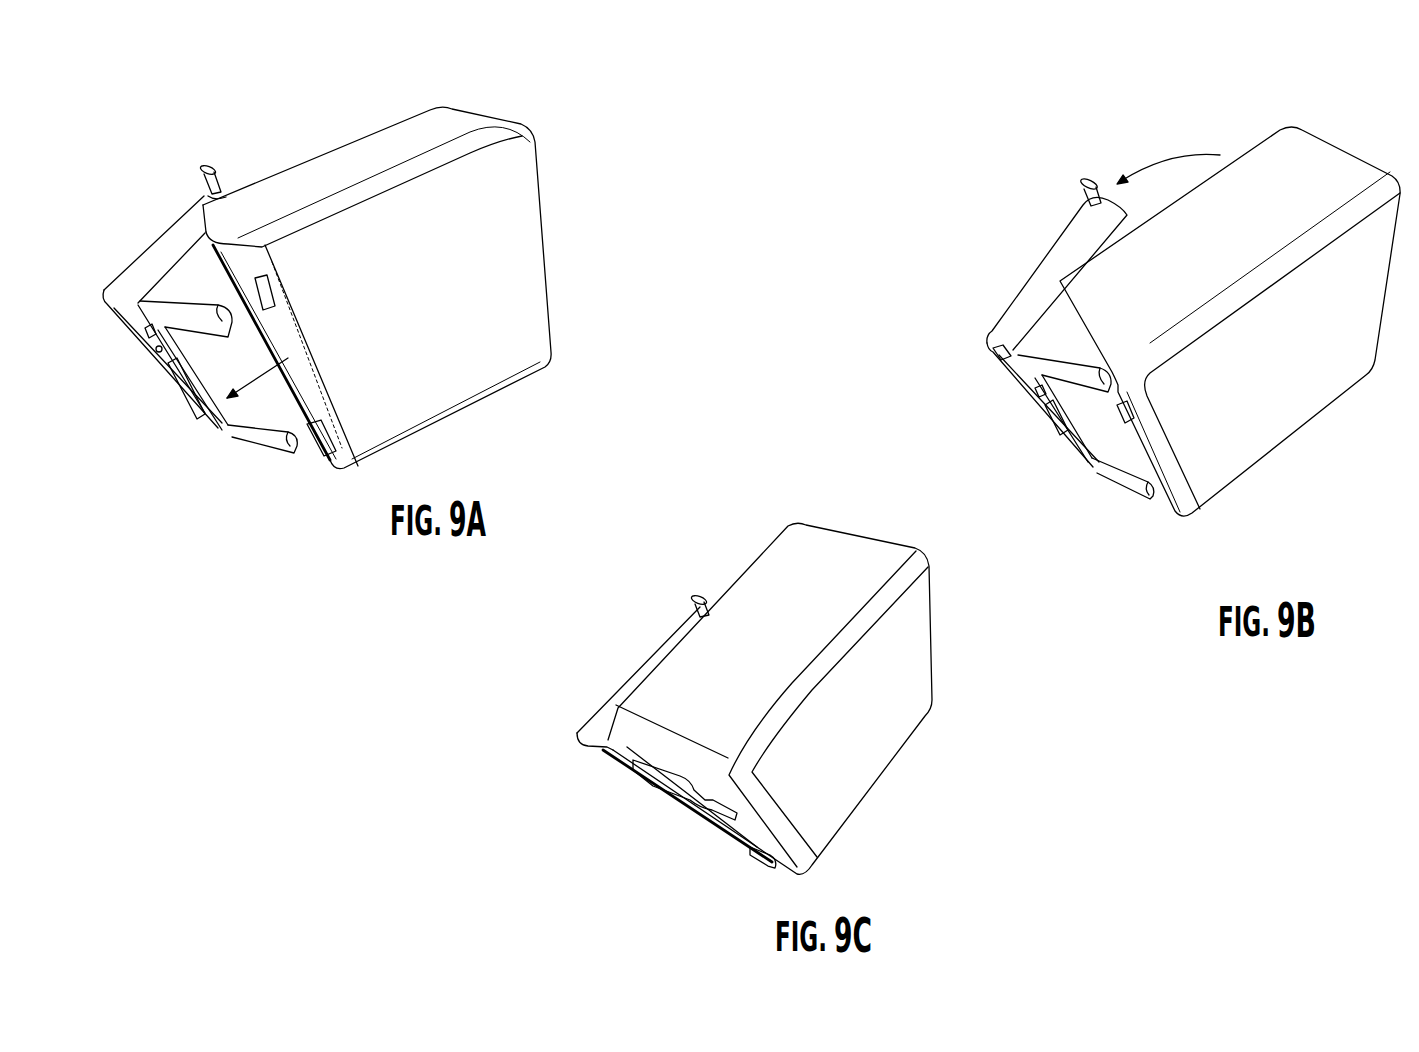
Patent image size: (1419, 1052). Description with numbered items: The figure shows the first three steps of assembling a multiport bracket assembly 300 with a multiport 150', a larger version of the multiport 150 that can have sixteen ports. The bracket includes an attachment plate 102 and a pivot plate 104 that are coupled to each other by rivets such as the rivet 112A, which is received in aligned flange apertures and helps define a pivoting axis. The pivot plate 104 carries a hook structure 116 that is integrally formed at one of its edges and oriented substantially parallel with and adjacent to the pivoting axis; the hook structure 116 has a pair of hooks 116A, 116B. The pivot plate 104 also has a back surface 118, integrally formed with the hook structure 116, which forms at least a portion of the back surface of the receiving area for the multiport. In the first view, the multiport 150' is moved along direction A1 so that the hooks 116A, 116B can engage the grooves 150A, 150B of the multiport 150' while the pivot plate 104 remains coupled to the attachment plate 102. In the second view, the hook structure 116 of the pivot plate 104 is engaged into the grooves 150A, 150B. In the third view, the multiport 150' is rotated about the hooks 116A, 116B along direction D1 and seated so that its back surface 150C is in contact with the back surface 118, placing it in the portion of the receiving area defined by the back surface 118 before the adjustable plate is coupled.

In FIG. 9A, the multiport bracket assembly 300 is at (135, 113).
In FIG. 9B, the multiport bracket assembly 300 is at (969, 129).
In FIG. 9C, the multiport bracket assembly 300 is at (617, 599).
In FIG. 9A, the attachment plate 102 is at (132, 323).
In FIG. 9B, the attachment plate 102 is at (1001, 360).
In FIG. 9A, the pivot plate 104 is at (213, 363).
In FIG. 9B, the pivot plate 104 is at (1018, 308).
In FIG. 9C, the pivot plate 104 is at (600, 722).
In FIG. 9A, the rivet 112A is at (208, 166).
In FIG. 9B, the rivet 112A is at (1084, 181).
In FIG. 9C, the rivet 112A is at (699, 596).
In FIG. 9A, the hook structure 116 is at (192, 417).
In FIG. 9B, the hook structure 116 is at (1058, 452).
In FIG. 9C, the hook structure 116 is at (655, 800).
In FIG. 9A, the hook 116A is at (205, 318).
In FIG. 9B, the hook 116A is at (1052, 375).
In FIG. 9C, the hook 116A is at (650, 777).
In FIG. 9A, the hook 116B is at (272, 440).
In FIG. 9B, the hook 116B is at (1102, 476).
In FIG. 9C, the hook 116B is at (717, 843).
In FIG. 9A, the back surface 118 is at (175, 296).
In FIG. 9B, the back surface 118 is at (1043, 341).
In FIG. 9B, the multiport 150 is at (1230, 296).
In FIG. 9C, the multiport 150 is at (805, 698).
In FIG. 9A, the multiport 150' is at (398, 287).
In FIG. 9A, the groove 150A is at (293, 292).
In FIG. 9B, the groove 150A is at (1138, 408).
In FIG. 9C, the groove 150A is at (712, 798).
In FIG. 9A, the groove 150B is at (343, 442).
In FIG. 9B, the groove 150B is at (1167, 488).
In FIG. 9C, the groove 150B is at (775, 854).
In FIG. 9A, the back surface 150C is at (349, 137).
In FIG. 9B, the back surface 150C is at (1152, 214).
In FIG. 9A, the direction A1 is at (257, 387).
In FIG. 9B, the direction D1 is at (1168, 155).